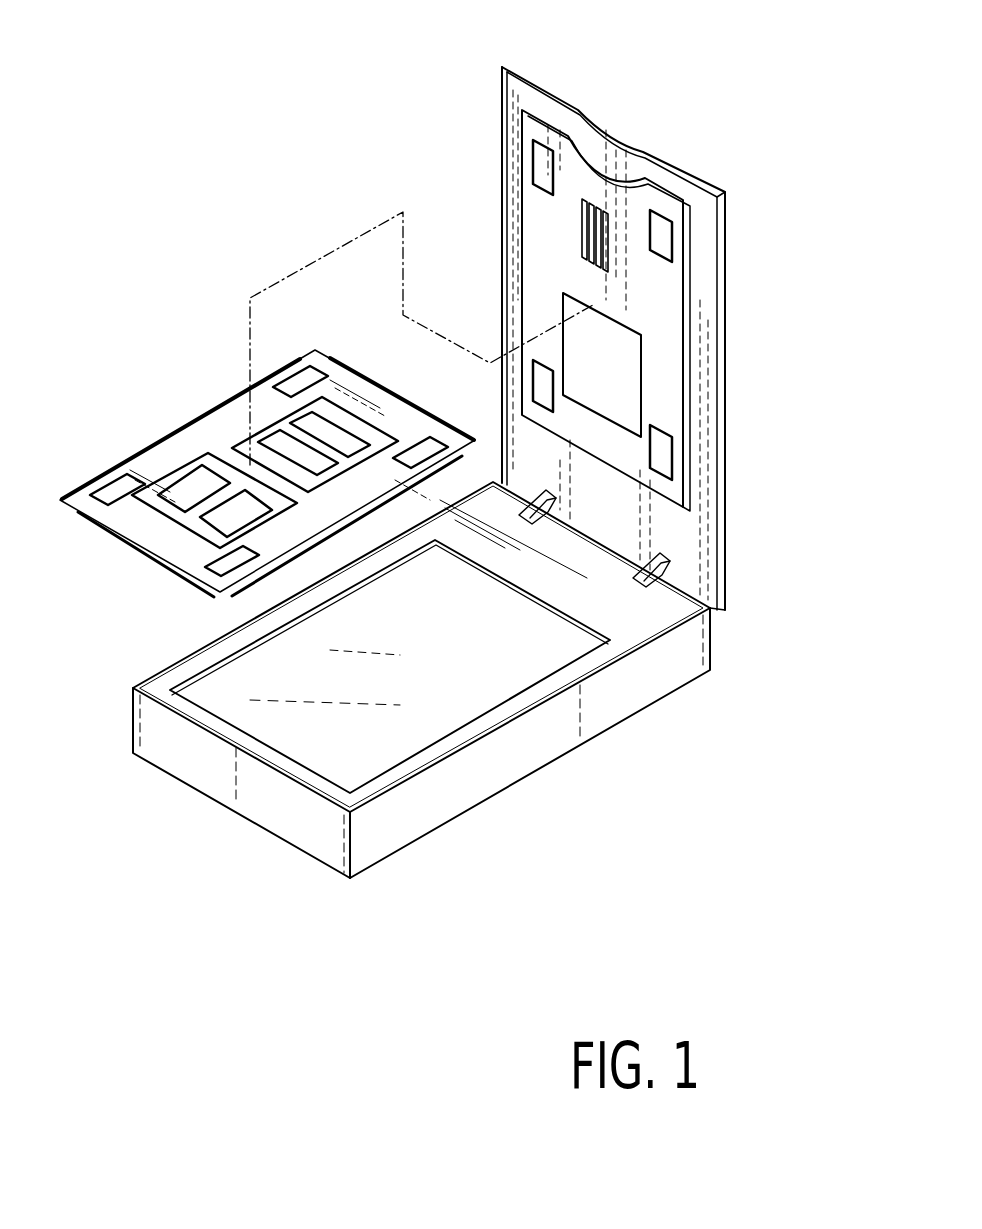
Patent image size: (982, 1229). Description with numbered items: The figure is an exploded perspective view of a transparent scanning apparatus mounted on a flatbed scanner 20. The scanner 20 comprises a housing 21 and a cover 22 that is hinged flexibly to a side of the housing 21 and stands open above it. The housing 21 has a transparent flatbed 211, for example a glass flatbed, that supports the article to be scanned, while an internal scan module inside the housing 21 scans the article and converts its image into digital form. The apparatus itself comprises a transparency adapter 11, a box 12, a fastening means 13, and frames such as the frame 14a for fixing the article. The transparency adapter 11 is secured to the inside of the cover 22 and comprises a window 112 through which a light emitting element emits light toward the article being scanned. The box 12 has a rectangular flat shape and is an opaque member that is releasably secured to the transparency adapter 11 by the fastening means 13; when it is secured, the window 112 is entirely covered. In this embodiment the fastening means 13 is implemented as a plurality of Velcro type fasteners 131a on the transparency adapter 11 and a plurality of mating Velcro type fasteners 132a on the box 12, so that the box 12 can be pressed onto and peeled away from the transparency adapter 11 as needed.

The transparency adapter 11 is at (650, 320).
The window 112 is at (625, 407).
The Velcro type fasteners 131a is at (660, 240).
The box 12 is at (188, 412).
The fastening means 13 is at (93, 467).
The frame 14a is at (232, 400).
The mating Velcro type fasteners 132a is at (222, 562).
The flatbed scanner 20 is at (500, 836).
The housing 21 is at (555, 722).
The transparent flatbed 211 is at (305, 647).
The cover 22 is at (551, 106).